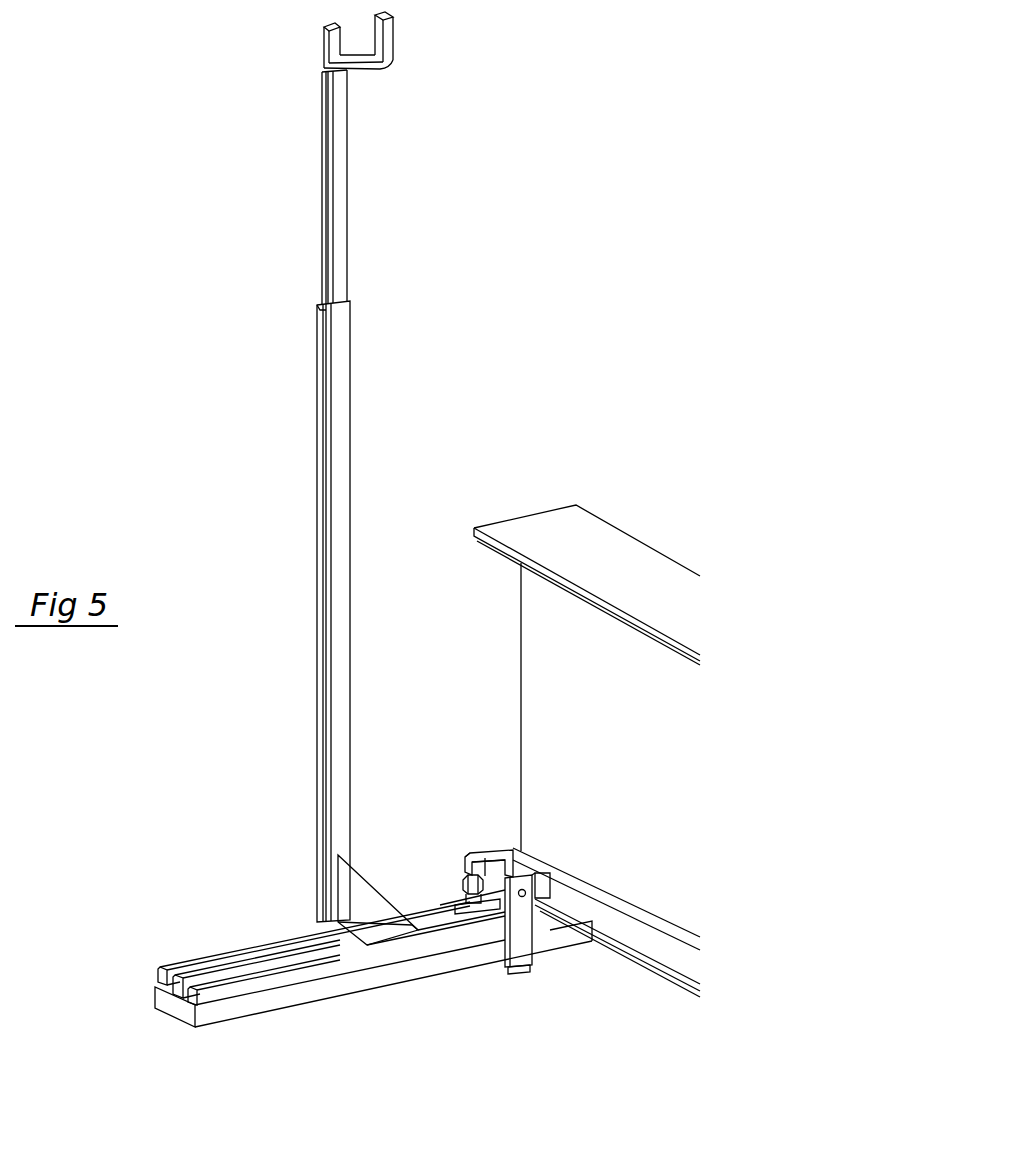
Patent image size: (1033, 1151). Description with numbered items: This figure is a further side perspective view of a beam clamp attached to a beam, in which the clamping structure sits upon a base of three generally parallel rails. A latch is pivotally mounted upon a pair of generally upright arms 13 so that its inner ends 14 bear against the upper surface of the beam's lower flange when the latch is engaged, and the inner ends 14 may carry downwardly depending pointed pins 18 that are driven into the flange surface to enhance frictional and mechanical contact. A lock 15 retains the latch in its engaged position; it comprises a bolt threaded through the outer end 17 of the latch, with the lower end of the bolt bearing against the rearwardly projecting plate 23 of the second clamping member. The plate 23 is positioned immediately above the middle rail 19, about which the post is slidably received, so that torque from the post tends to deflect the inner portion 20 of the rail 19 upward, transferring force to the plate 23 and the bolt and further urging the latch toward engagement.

The upright arms 13 is at (522, 933).
The inner ends 14 is at (515, 856).
The lock 15 is at (458, 884).
The outer end 17 is at (506, 962).
The pins 18 is at (575, 905).
The middle rail 19 is at (193, 1030).
The inner portion 20 is at (462, 912).
The rearwardly projecting plate 23 is at (475, 914).